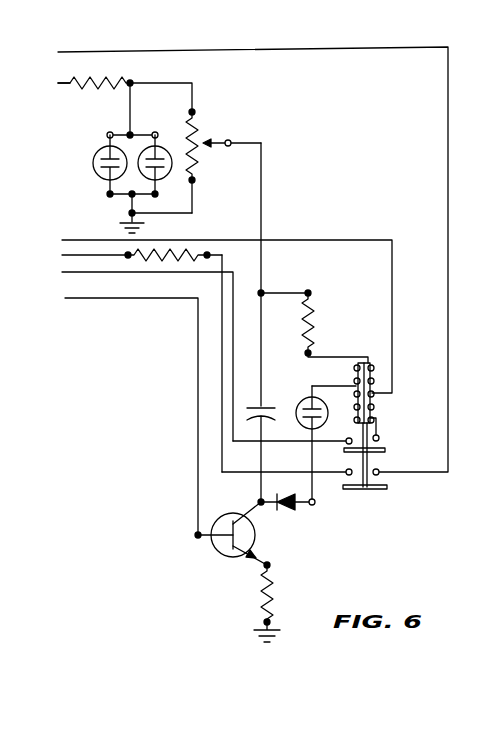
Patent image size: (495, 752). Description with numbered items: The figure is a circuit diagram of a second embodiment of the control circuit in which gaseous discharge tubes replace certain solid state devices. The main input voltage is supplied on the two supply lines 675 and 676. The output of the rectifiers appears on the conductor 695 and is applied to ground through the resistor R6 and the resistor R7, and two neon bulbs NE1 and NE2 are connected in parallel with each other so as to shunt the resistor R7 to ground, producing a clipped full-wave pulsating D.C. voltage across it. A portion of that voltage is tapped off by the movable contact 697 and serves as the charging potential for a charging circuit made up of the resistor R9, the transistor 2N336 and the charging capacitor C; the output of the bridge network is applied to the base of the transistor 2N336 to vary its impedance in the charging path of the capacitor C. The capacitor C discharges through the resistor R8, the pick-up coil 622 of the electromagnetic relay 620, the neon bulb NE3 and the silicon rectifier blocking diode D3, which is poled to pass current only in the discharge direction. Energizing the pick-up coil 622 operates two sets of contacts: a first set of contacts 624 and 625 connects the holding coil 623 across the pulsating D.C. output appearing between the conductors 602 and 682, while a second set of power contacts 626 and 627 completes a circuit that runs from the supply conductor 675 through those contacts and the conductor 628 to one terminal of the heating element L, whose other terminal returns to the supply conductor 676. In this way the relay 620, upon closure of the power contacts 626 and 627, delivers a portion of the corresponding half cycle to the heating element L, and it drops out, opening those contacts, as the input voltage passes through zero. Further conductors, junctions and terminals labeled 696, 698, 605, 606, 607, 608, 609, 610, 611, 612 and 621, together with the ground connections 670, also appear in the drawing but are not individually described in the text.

The main input voltage supply line 675 is at (96, 52).
The resistor R6 is at (106, 82).
The conductor 695 is at (62, 84).
The junction line 696 is at (172, 83).
The resistor R7 is at (203, 124).
The movable contact 697 is at (212, 146).
The connecting line 698 is at (262, 190).
The neon bulb NE1 is at (100, 150).
The neon bulb NE2 is at (168, 178).
The ground 670 is at (132, 213).
The conductor 602 is at (106, 240).
The heating element L is at (184, 248).
The main input voltage supply line 676 is at (110, 255).
The conductor 682 is at (110, 272).
The line 605 is at (128, 298).
The conductor 628 is at (222, 356).
The resistor R8 is at (316, 322).
The relay coil lead 612 is at (308, 357).
The electromagnetic actuator or relay 620 is at (374, 343).
The pick-up coil 622 is at (368, 360).
The holding coil 623 is at (374, 401).
The relay core 621 is at (366, 386).
The neon tube lead 611 is at (342, 386).
The neon bulb NE3 is at (307, 401).
The charging capacitor C is at (256, 438).
The line 610 is at (304, 427).
The line 609 is at (261, 455).
The contact 624 is at (379, 436).
The contact 625 is at (386, 450).
The power contact 627 is at (379, 475).
The power contact 626 is at (380, 490).
The collector lead 608 is at (253, 514).
The base lead 606 is at (198, 537).
The transistor 2N336 is at (226, 553).
The emitter lead 607 is at (254, 553).
The silicon rectifier blocking diode D3 is at (300, 505).
The resistor R9 is at (271, 592).